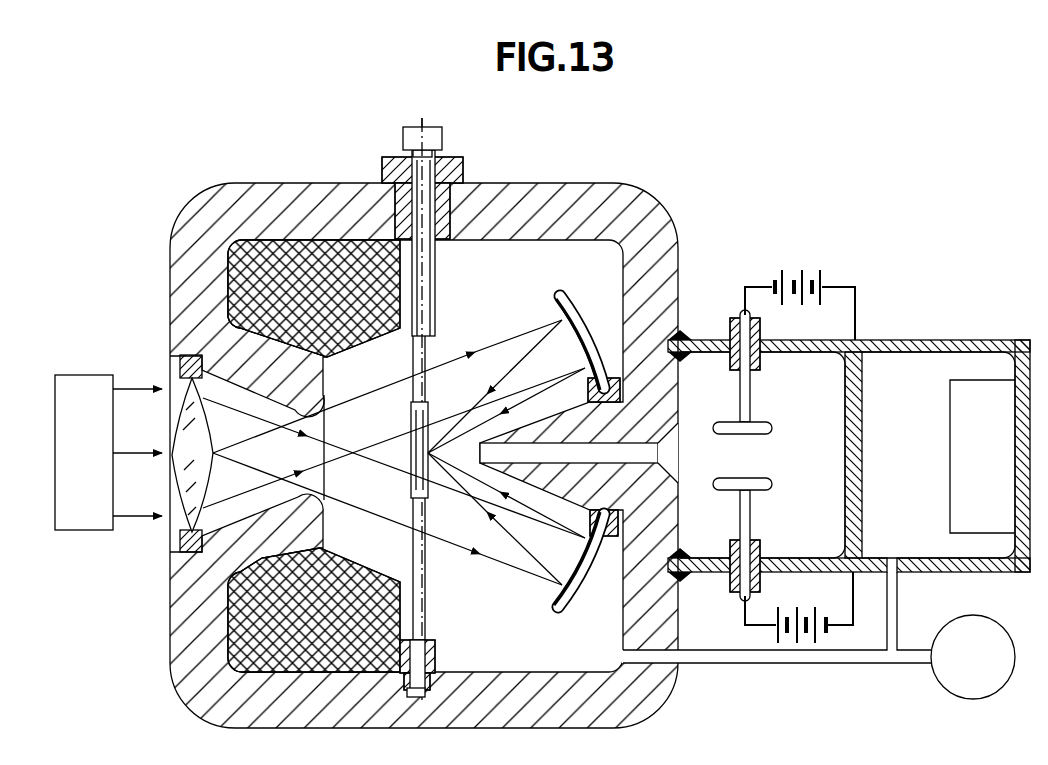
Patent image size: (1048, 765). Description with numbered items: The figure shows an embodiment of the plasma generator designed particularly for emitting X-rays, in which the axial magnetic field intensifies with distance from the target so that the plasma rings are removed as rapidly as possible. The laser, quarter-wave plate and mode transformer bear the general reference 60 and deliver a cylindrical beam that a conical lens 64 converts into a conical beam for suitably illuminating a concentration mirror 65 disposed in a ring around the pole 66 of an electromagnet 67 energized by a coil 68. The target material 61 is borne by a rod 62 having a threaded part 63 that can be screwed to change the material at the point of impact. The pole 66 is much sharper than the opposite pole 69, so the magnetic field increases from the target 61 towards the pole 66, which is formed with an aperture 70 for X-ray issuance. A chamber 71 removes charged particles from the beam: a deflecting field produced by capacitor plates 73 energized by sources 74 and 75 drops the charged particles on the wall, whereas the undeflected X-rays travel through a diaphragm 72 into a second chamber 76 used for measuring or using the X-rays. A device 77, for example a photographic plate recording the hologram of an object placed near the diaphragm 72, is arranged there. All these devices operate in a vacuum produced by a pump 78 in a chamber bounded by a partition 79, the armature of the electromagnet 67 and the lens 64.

The laser, quarter-wave plate and mode transformer 60 is at (106, 446).
The target material 61 is at (428, 430).
The rod 62 is at (432, 352).
The threaded part 63 is at (428, 140).
The conical lens 64 is at (185, 440).
The concentration mirror 65 is at (578, 320).
The pole 66 is at (490, 440).
The electromagnet 67 is at (268, 195).
The coil 68 is at (345, 325).
The opposite pole 69 is at (305, 527).
The aperture 70 is at (637, 455).
The chamber 71 is at (800, 413).
The diaphragm 72 is at (860, 459).
The capacitor plates 73 is at (757, 479).
The source 74 is at (805, 616).
The source 75 is at (805, 276).
The second chamber 76 is at (890, 418).
The device 77 is at (988, 476).
The pump 78 is at (918, 695).
The partition 79 is at (944, 340).